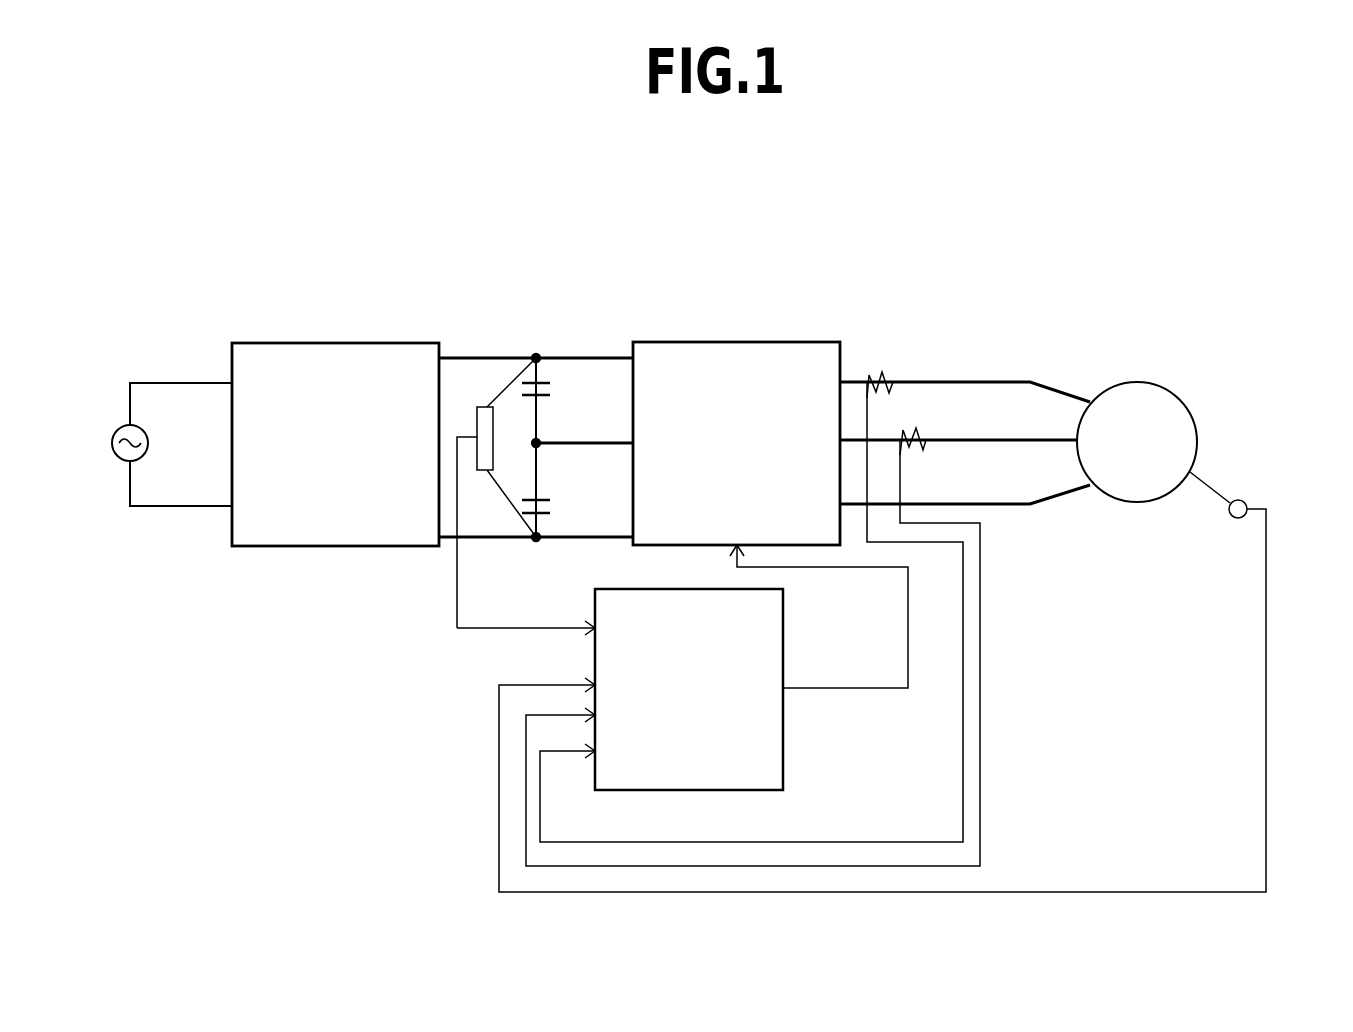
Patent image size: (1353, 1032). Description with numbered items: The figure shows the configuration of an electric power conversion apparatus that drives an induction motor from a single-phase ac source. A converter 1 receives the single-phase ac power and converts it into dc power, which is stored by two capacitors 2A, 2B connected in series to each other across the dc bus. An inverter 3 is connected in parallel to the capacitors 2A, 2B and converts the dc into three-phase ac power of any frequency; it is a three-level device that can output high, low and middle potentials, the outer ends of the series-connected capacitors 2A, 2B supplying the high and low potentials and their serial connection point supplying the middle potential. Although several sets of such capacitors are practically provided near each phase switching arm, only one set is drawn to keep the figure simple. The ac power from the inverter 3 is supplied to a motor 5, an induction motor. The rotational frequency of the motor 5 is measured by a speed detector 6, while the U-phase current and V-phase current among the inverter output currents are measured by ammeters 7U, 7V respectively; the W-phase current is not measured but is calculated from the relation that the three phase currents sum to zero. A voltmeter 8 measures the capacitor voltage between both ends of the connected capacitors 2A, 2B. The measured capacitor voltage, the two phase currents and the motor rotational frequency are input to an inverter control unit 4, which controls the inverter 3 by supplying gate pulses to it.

The converter 1 is at (308, 343).
The capacitor 2A is at (552, 387).
The capacitor 2B is at (552, 504).
The inverter 3 is at (735, 342).
The inverter control unit 4 is at (783, 638).
The motor 5 is at (1135, 381).
The speed detector 6 is at (1243, 500).
The ammeter 7U is at (887, 382).
The ammeter 7V is at (910, 440).
The voltmeter 8 is at (481, 407).